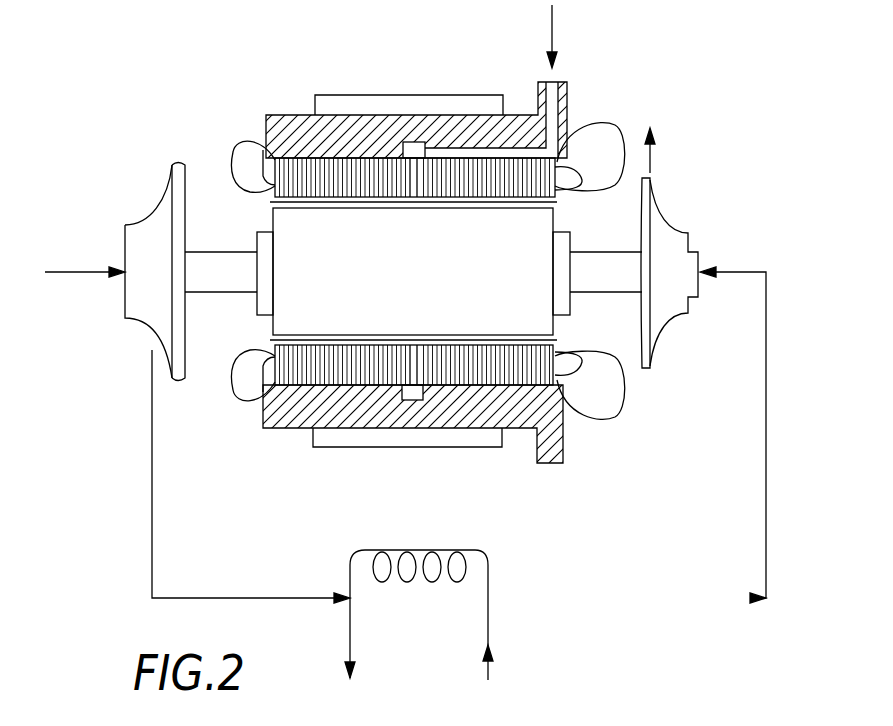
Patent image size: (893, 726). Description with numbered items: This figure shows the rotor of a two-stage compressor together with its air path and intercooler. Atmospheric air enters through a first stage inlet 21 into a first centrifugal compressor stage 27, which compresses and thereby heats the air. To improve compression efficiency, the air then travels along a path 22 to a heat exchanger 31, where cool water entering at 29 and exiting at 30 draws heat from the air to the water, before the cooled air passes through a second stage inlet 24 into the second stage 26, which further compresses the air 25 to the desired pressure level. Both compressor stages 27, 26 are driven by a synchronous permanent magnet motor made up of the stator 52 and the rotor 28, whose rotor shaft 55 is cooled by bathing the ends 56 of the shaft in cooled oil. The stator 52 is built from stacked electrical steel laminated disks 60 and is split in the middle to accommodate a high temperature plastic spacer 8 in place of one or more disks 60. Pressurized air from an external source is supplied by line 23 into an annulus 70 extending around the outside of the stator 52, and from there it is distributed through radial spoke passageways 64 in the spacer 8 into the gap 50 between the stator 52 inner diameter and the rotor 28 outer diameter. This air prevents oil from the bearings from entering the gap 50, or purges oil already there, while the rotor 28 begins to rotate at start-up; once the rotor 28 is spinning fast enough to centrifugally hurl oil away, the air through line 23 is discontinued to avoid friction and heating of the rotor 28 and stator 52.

The high temperature plastic spacer 8 is at (425, 355).
The first stage inlet 21 is at (63, 270).
The conduit from compressor to heat exchanger 22 is at (152, 432).
The line 23 is at (554, 22).
The second stage inlet 24 is at (766, 410).
The air 25 is at (652, 152).
The second stage 26 is at (681, 283).
The first centrifugal compressor stage 27 is at (167, 280).
The rotor 28 is at (452, 287).
The cool water entry 29 is at (490, 672).
The water exit 30 is at (348, 650).
The heat exchanger 31 is at (430, 583).
The gap 50 is at (556, 205).
The stator 52 is at (295, 350).
The rotor shaft 55 is at (233, 294).
The ends of the shaft 56 is at (212, 251).
The electrical steel laminated disks 60 is at (346, 386).
The spoke passageways 64 is at (403, 185).
The annulus 70 is at (413, 142).